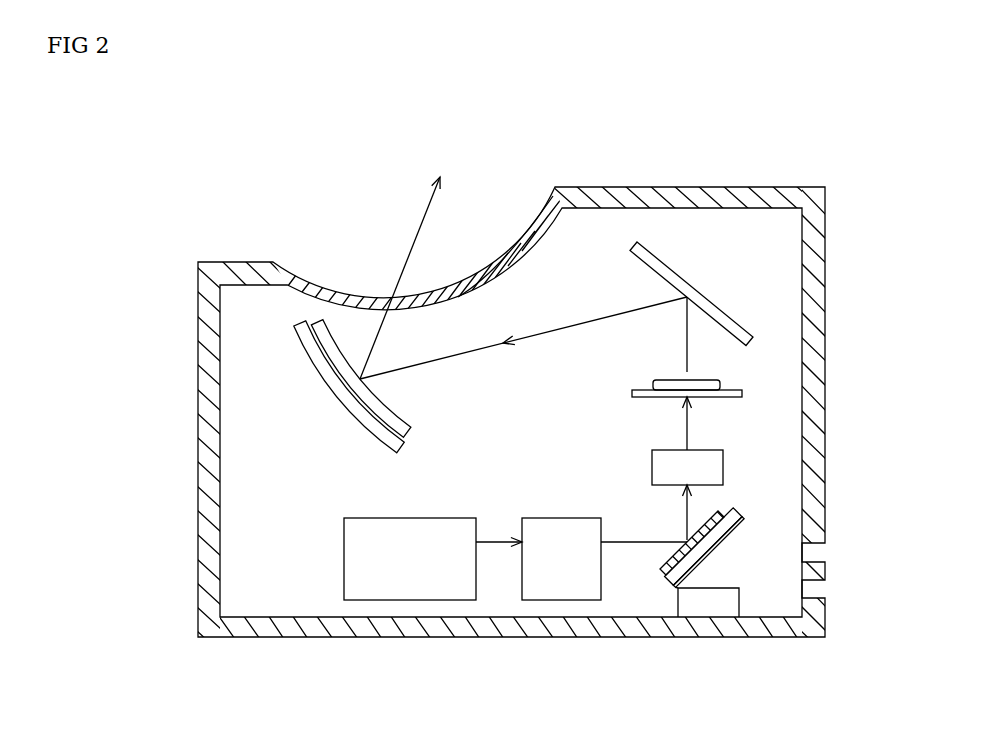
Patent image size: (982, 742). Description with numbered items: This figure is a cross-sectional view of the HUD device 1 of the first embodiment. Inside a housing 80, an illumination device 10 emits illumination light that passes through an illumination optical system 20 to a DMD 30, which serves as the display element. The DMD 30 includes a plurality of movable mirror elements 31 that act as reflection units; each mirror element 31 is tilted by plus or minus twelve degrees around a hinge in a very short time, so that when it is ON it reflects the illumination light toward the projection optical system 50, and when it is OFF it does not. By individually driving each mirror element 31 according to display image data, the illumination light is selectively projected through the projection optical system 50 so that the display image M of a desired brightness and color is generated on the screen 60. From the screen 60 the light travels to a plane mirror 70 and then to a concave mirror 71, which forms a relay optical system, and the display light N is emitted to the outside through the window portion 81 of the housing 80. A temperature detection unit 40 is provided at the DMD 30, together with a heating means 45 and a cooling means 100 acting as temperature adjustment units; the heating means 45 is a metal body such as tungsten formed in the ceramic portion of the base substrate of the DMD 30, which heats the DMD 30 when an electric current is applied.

The HUD device 1 is at (734, 170).
The illumination device 10 is at (408, 517).
The illumination optical system 20 is at (565, 517).
The DMD 30 is at (742, 527).
The movable mirror element 31 is at (660, 572).
The temperature detection unit 40 is at (737, 510).
The heating means 45 is at (677, 590).
The projection optical system 50 is at (653, 448).
The screen 60 is at (715, 398).
The display image M is at (715, 380).
The plane mirror 70 is at (685, 277).
The concave mirror 71 is at (308, 350).
The housing 80 is at (638, 187).
The window portion 81 is at (550, 240).
The cooling means 100 is at (768, 597).
The display light N is at (478, 350).